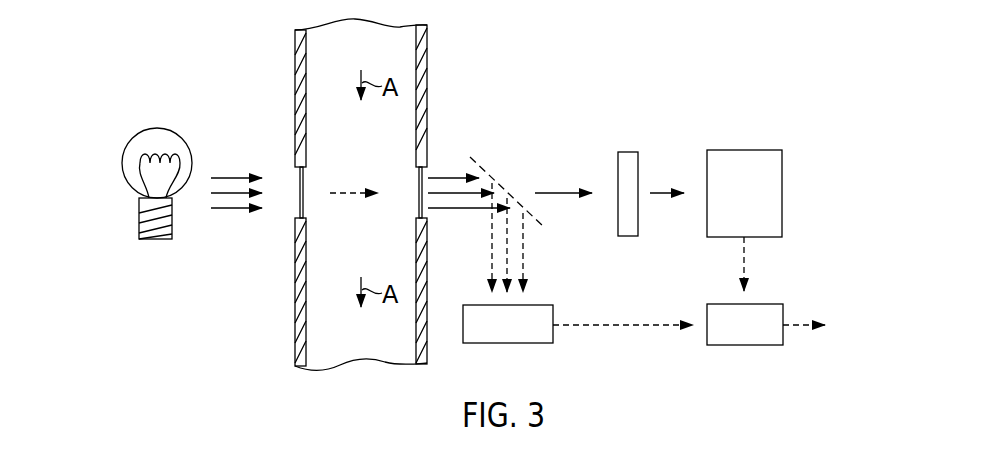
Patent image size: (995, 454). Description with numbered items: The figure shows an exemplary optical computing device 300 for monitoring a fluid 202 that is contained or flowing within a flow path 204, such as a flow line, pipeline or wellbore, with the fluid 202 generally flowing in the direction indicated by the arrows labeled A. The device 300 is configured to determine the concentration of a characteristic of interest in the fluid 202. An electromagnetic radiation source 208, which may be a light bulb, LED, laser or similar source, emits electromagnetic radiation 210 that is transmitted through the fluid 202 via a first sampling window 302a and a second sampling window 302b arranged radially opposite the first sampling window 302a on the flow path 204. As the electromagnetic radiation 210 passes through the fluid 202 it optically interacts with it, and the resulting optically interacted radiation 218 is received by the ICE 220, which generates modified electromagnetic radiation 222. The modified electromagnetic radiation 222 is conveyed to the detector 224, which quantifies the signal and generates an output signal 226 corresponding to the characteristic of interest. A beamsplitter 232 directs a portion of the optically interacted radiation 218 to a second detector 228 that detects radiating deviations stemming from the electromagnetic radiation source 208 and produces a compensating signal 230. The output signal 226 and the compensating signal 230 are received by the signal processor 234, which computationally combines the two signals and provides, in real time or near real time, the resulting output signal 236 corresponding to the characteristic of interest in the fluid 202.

The fluid 202 is at (379, 165).
The flow path 204 is at (428, 47).
The electromagnetic radiation source 208 is at (135, 143).
The electromagnetic radiation 210 is at (241, 177).
The optically interacted radiation 218 is at (452, 177).
The ICE 220 is at (630, 154).
The modified electromagnetic radiation 222 is at (667, 192).
The detector 224 is at (762, 204).
The output signal 226 is at (746, 262).
The second detector 228 is at (526, 337).
The compensating signal 230 is at (593, 327).
The beamsplitter 232 is at (484, 156).
The signal processor 234 is at (763, 339).
The resulting output signal 236 is at (810, 325).
The optical computing device 300 is at (587, 91).
The first sampling window 302a is at (300, 212).
The second sampling window 302b is at (427, 218).